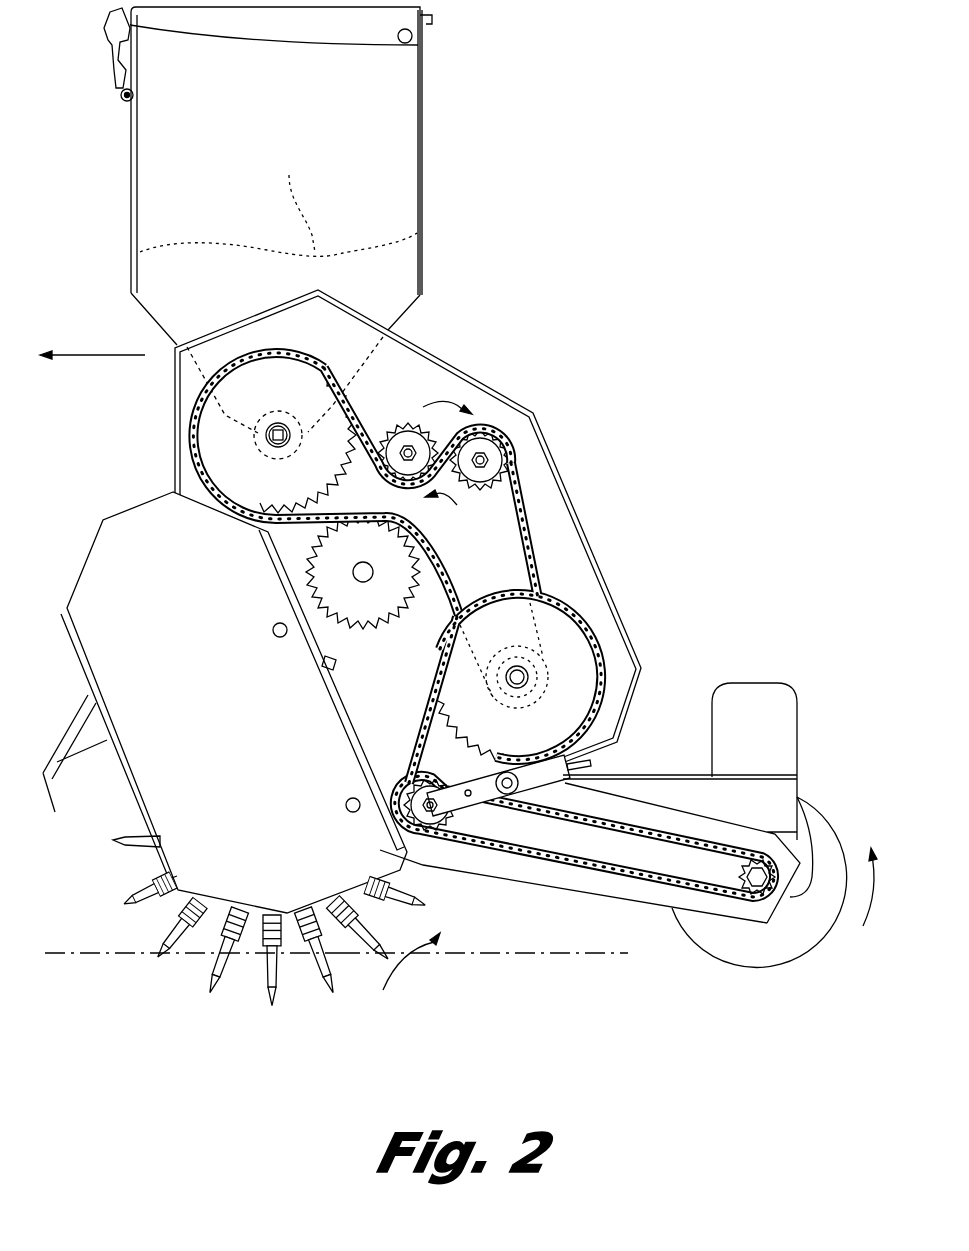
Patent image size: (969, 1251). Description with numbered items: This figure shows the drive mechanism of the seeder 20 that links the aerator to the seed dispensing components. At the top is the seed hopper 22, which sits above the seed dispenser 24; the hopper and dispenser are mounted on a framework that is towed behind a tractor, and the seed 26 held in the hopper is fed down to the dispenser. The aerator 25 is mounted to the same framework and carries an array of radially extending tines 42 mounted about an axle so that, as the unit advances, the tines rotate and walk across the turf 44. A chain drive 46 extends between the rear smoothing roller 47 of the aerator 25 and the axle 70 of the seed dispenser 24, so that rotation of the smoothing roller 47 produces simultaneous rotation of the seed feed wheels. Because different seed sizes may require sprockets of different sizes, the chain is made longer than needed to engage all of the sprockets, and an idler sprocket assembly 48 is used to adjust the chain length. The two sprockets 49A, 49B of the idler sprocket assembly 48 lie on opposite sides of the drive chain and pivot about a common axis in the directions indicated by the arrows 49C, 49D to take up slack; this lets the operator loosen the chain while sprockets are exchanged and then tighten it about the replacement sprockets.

The seeder 20 is at (454, 255).
The seed hopper 22 is at (447, 167).
The seed dispenser 24 is at (233, 441).
The aerator 25 is at (181, 968).
The seed 26 is at (278, 204).
The tines 42 is at (122, 890).
The turf 44 is at (545, 953).
The chain drive 46 is at (536, 503).
The rear smoothing roller 47 is at (822, 790).
The idler sprocket assembly 48 is at (500, 408).
The sprocket 49A is at (404, 447).
The sprocket 49B is at (492, 452).
The arrow 49C is at (452, 402).
The arrow 49D is at (457, 505).
The axle 70 is at (275, 430).